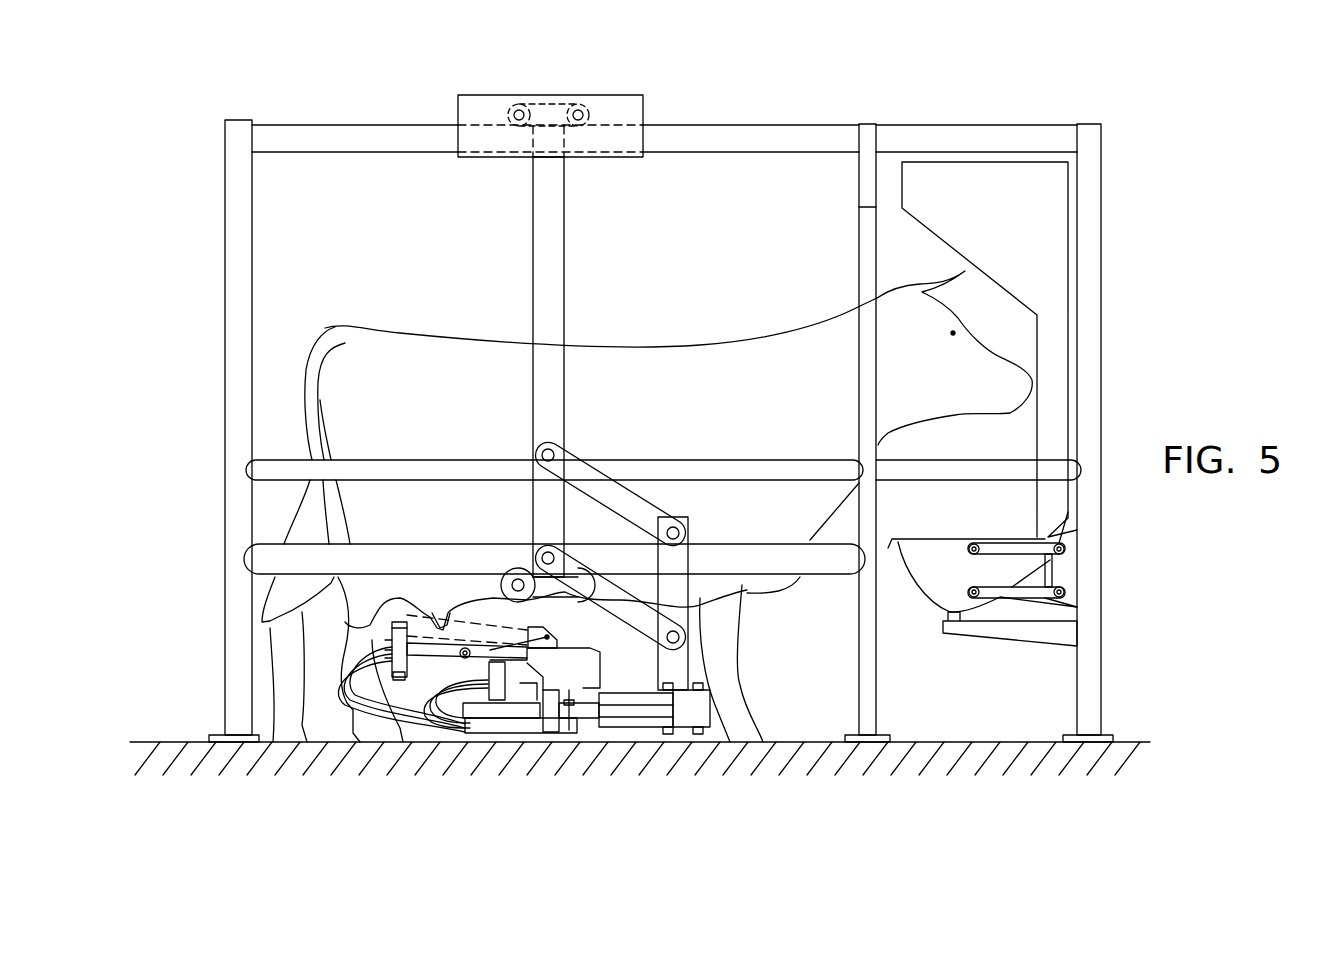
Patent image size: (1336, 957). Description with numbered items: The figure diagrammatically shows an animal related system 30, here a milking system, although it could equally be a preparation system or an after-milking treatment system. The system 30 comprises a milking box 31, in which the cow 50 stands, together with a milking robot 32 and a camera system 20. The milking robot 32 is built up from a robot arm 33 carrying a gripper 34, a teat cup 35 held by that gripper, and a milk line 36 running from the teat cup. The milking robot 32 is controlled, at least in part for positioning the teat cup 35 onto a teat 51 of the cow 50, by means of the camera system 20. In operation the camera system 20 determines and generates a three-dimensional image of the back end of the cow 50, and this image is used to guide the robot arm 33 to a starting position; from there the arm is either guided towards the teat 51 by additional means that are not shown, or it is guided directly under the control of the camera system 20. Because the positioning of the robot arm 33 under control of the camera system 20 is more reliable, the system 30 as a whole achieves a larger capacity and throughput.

The camera system 20 is at (593, 627).
The animal related system 30 is at (1115, 132).
The milking box 31 is at (238, 284).
The milking robot 32 is at (620, 672).
The robot arm 33 is at (425, 705).
The gripper 34 is at (375, 700).
The teat cup 35 is at (396, 615).
The milk line 36 is at (440, 712).
The cow 50 is at (642, 377).
The teat 51 is at (484, 655).